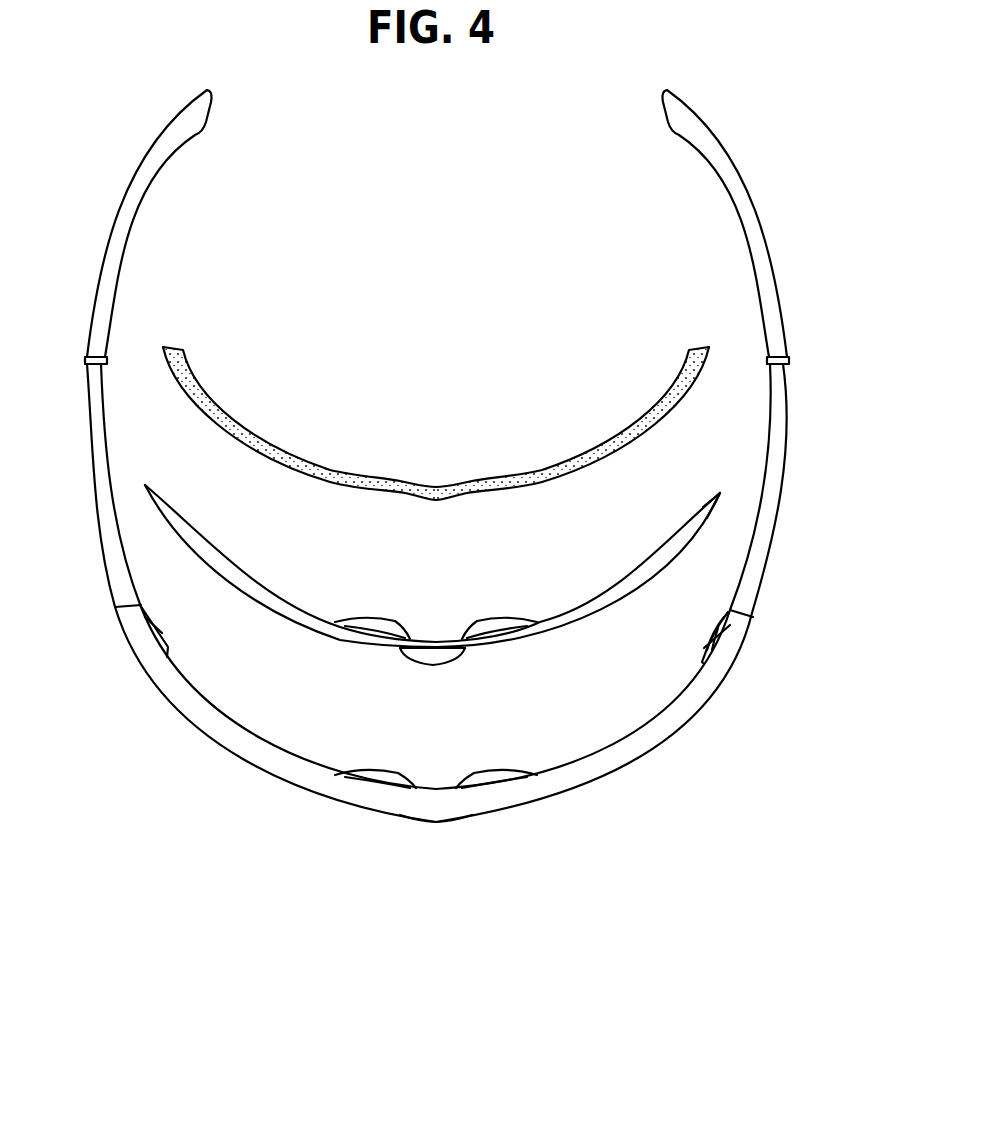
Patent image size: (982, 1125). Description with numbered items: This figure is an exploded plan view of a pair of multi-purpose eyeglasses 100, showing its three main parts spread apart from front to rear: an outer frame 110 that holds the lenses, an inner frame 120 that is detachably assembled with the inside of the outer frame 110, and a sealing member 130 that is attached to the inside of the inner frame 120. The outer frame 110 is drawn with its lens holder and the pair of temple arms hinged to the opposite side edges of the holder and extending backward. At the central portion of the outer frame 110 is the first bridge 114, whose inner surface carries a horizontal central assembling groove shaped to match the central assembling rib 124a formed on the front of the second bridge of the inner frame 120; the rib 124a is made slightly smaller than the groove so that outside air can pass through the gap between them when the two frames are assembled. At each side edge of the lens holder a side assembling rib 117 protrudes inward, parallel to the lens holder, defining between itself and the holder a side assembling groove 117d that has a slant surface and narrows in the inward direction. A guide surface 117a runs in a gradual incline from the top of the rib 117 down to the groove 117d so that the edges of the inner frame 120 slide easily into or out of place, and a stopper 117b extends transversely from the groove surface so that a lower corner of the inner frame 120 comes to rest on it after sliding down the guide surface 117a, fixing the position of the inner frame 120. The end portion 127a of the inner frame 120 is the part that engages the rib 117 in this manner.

The multi-purpose eyeglasses 100 is at (634, 905).
The outer frame 110 is at (553, 740).
The first bridge 114 is at (440, 813).
The side assembling rib 117 is at (711, 606).
The guide surface 117a is at (730, 625).
The stopper 117b is at (703, 652).
The side assembling groove 117d is at (718, 637).
The inner frame 120 is at (500, 594).
The central assembling rib 124a is at (433, 657).
The lens end tip 127a is at (712, 493).
The sealing member 130 is at (501, 452).